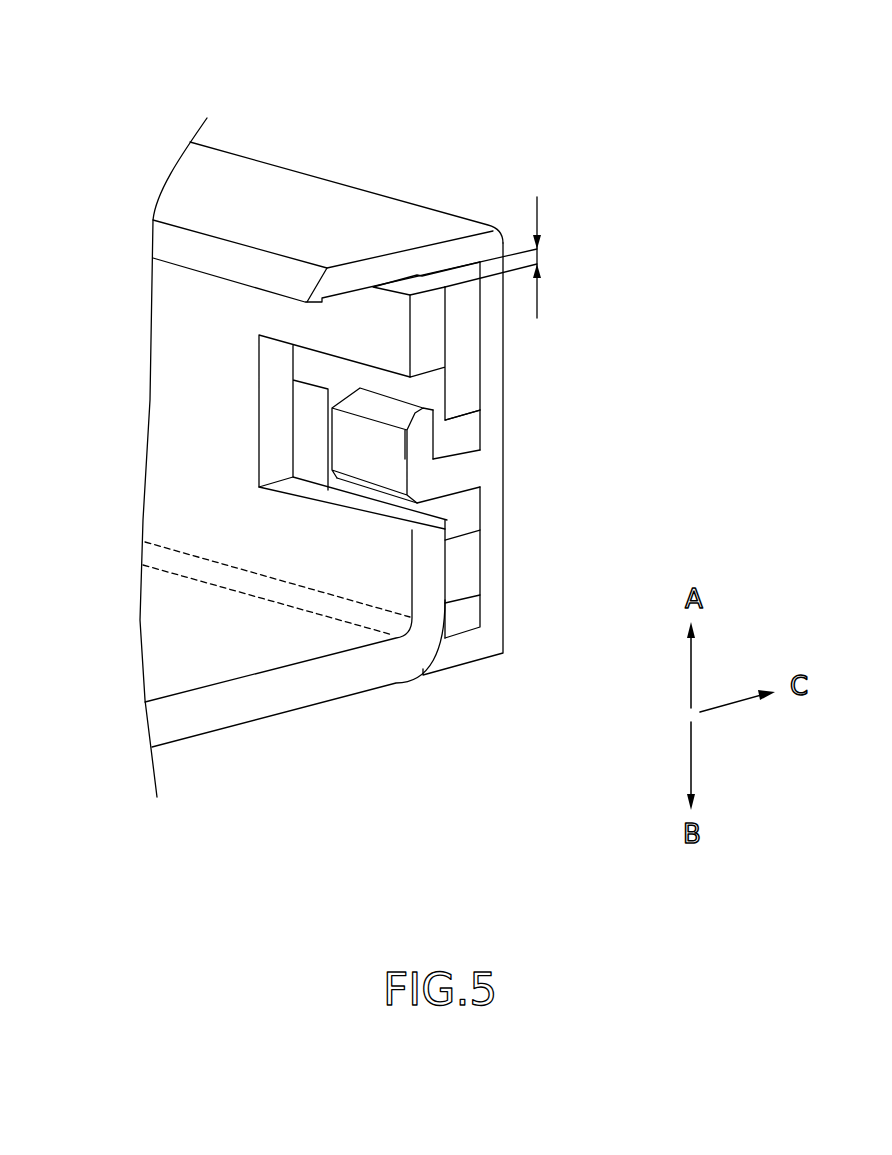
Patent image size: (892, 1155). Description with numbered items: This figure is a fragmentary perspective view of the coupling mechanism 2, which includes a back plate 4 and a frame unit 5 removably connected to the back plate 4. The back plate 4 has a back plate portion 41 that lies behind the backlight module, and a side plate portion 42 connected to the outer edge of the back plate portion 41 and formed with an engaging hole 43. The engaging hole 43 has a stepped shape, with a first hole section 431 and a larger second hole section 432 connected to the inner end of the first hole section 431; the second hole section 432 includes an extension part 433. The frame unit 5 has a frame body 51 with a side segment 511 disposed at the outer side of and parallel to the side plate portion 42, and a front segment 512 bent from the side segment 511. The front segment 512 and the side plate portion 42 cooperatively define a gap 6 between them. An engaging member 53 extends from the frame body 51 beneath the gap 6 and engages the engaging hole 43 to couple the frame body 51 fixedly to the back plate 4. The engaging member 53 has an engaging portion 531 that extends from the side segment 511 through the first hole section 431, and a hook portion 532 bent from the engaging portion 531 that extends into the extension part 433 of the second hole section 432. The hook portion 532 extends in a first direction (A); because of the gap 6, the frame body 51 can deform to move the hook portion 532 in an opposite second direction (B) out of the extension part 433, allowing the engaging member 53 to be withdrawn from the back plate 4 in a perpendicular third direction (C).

The coupling mechanism 2 is at (418, 132).
The back plate 4 is at (356, 482).
The back plate portion 41 is at (233, 717).
The side plate portion 42 is at (170, 333).
The engaging hole 43 is at (380, 432).
The first hole section 431 is at (467, 420).
The second hole section 432 is at (300, 424).
The extension part 433 is at (430, 384).
The frame unit 5 is at (400, 425).
The frame body 51 is at (520, 690).
The side segment 511 is at (500, 337).
The front segment 512 is at (268, 177).
The engaging member 53 is at (478, 513).
The engaging portion 531 is at (460, 478).
The hook portion 532 is at (380, 475).
The gap 6 is at (553, 257).